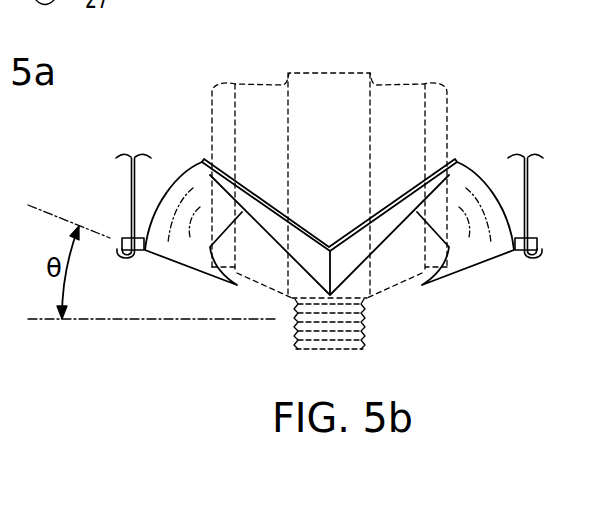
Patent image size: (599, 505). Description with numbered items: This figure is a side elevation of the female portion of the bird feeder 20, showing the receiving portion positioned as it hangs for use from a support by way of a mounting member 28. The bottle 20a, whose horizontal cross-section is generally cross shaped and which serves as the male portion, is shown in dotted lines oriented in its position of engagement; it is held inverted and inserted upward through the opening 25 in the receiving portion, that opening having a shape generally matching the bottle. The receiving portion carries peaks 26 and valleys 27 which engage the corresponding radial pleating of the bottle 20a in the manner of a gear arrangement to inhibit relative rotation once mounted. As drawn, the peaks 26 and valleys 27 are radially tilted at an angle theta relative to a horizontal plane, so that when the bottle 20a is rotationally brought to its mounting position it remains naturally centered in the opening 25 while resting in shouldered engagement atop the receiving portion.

The bird feeder 20 is at (500, 90).
The bottle 20a is at (367, 73).
The opening 25 is at (237, 285).
The peaks 26 is at (208, 183).
The valleys 27 is at (330, 273).
The mounting member 28 is at (132, 181).